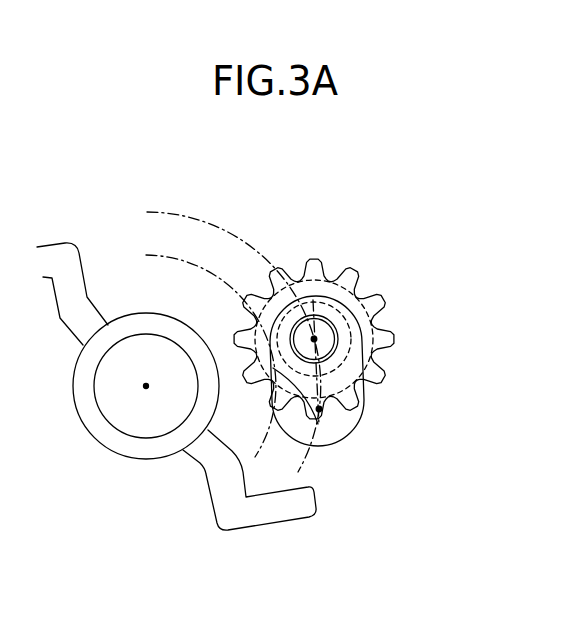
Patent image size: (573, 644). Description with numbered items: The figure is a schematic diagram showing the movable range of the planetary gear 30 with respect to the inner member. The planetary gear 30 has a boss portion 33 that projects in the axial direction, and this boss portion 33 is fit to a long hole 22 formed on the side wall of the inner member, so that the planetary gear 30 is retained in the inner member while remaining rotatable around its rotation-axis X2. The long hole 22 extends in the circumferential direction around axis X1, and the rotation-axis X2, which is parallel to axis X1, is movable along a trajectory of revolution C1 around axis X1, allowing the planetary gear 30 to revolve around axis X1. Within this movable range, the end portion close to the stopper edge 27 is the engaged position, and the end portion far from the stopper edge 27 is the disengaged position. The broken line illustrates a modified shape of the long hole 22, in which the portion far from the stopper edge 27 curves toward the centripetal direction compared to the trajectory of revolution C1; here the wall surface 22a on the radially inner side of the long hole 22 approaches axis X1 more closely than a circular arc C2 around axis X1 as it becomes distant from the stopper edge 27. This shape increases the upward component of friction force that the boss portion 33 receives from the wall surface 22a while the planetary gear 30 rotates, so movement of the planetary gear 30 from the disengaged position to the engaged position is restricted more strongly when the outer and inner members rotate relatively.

The long hole 22 is at (297, 270).
The wall surface 22a is at (246, 331).
The stopper edge 27 is at (314, 500).
The planetary gear 30 is at (313, 258).
The boss portion 33 is at (366, 366).
The axis X1 is at (146, 386).
The rotation-axis X2 is at (314, 339).
The trajectory of revolution C1 is at (216, 336).
The circular arc C2 is at (194, 350).